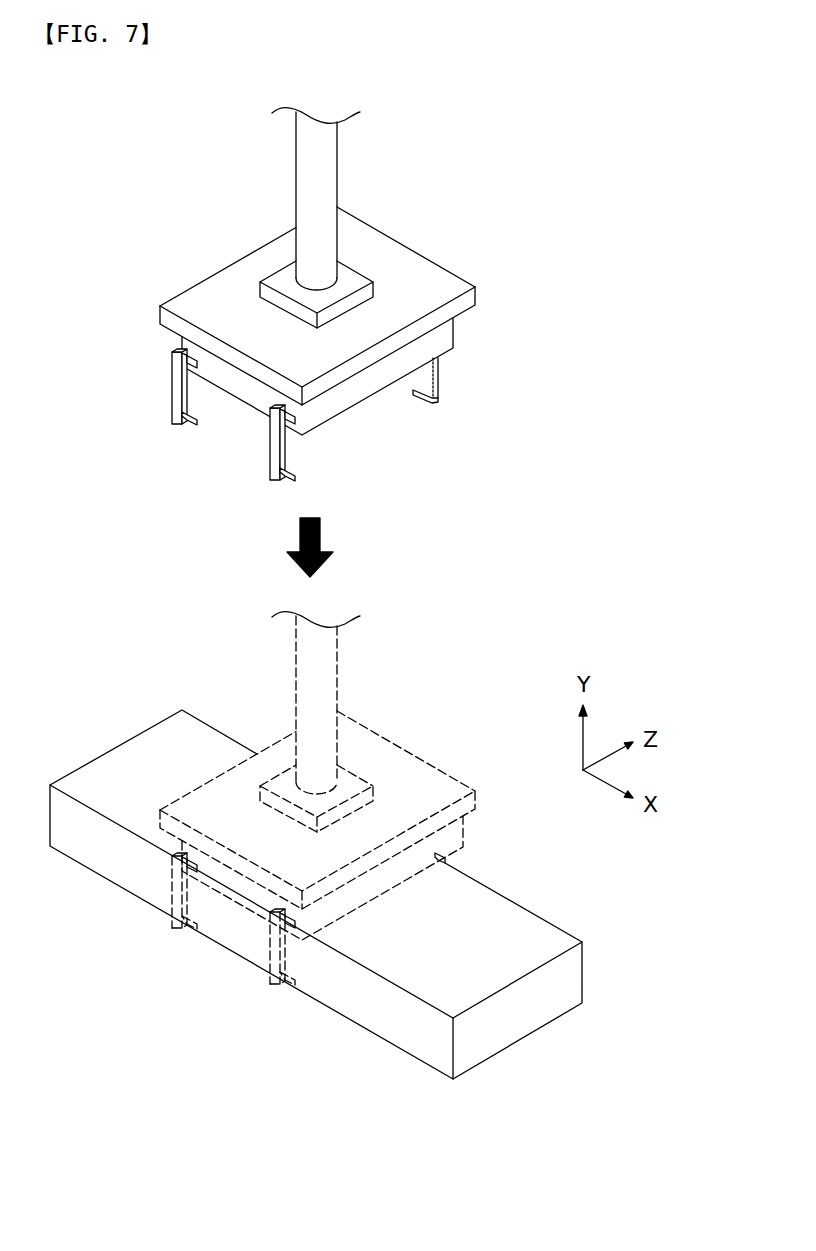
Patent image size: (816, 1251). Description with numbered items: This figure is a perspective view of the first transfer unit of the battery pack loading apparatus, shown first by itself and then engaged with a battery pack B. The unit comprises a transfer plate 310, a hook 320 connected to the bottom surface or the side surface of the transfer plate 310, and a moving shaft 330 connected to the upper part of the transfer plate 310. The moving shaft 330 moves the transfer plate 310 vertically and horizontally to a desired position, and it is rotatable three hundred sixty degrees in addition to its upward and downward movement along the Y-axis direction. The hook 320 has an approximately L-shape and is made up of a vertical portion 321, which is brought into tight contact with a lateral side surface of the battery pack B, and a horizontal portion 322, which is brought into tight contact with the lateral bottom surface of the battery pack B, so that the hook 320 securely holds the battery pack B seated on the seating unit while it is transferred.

The moving shaft 330 is at (328, 167).
The transfer plate 310 is at (443, 280).
The hook 320 is at (555, 322).
The vertical portion 321 is at (435, 377).
The horizontal portion 322 is at (437, 397).
The battery pack B is at (552, 937).